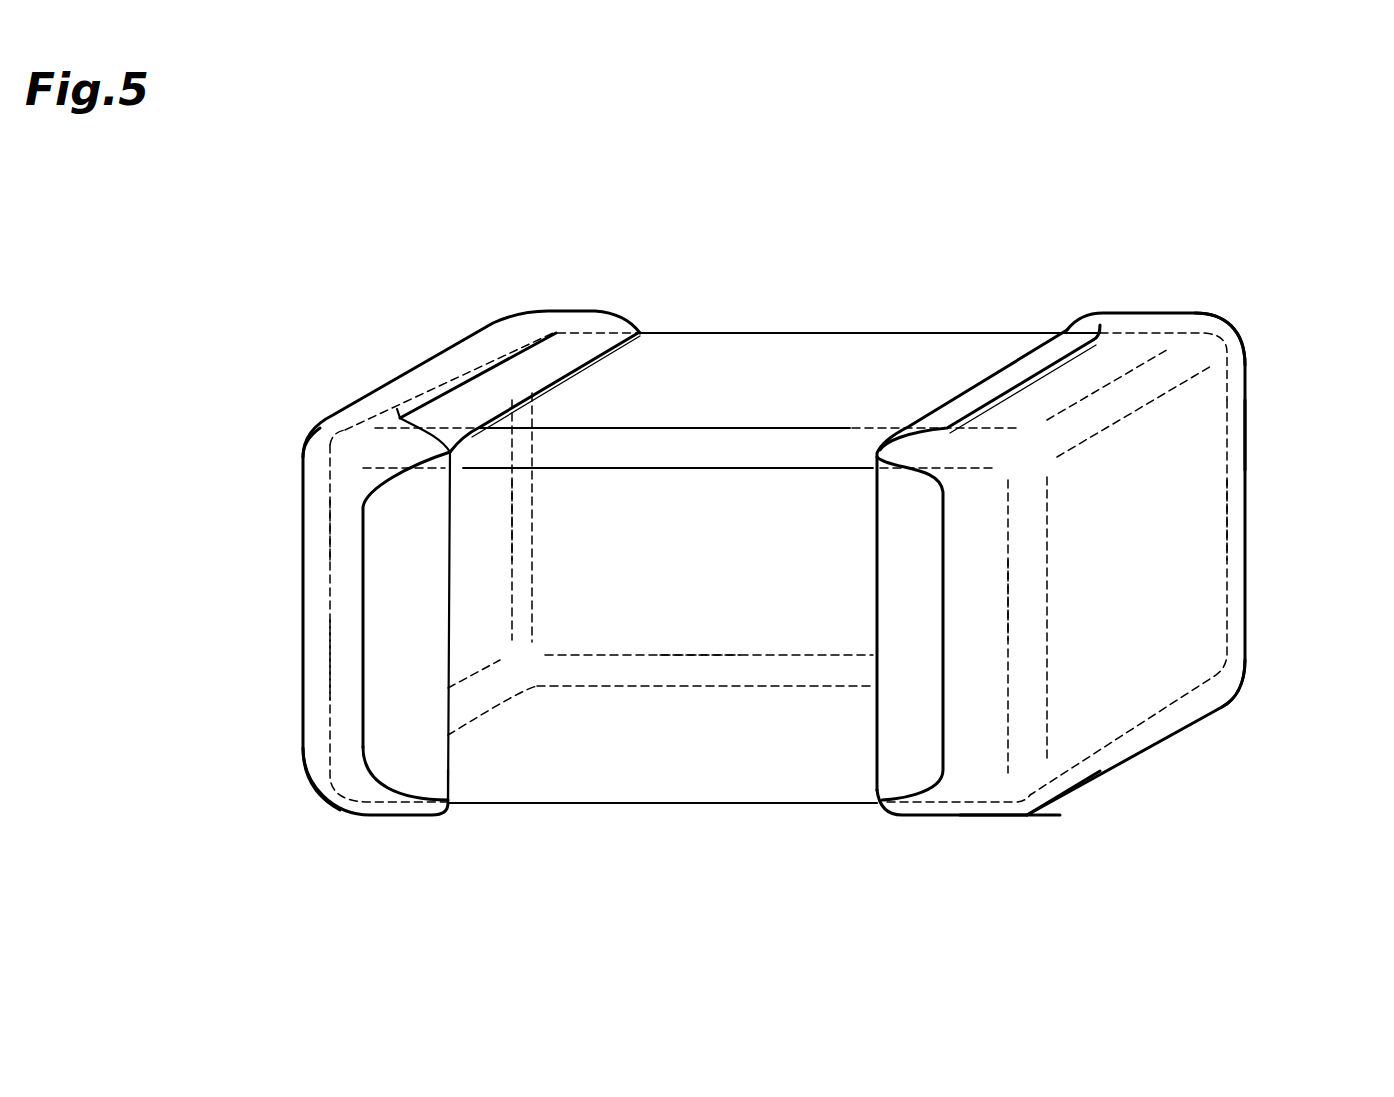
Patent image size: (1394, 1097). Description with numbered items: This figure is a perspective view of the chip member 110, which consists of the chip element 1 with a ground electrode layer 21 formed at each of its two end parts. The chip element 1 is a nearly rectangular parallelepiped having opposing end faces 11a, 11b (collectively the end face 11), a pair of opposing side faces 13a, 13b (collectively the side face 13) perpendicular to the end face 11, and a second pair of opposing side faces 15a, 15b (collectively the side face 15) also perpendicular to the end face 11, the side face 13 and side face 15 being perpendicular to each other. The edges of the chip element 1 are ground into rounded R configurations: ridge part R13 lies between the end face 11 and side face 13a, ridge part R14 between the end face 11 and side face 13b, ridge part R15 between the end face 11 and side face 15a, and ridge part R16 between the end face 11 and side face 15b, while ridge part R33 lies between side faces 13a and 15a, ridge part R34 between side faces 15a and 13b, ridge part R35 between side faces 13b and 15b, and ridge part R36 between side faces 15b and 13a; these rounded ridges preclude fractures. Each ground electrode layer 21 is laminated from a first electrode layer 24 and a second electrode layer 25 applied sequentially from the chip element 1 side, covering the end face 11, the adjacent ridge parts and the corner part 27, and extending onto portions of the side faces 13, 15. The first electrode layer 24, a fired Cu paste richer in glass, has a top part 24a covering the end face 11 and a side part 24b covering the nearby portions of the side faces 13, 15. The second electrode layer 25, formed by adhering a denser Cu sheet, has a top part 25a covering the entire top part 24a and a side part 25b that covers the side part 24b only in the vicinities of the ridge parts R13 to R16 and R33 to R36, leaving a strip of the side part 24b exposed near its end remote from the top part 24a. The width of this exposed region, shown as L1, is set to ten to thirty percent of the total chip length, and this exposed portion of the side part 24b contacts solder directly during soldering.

The chip member 110 is at (1252, 215).
The chip element 1 is at (884, 330).
The ground electrode layer 21 is at (763, 504).
The first electrode layer 24 is at (763, 519).
The top part of the first electrode layer 24a is at (343, 580).
The side part of the first electrode layer 24b is at (523, 370).
The second electrode layer 25 is at (763, 526).
The top part of the second electrode layer 25a is at (302, 543).
The side part of the second electrode layer 25b is at (463, 362).
The end face 11 is at (768, 562).
The end face 11a is at (353, 637).
The end face 11b is at (1147, 592).
The side face 13 is at (697, 570).
The side face 13a is at (708, 370).
The side face 13b is at (778, 768).
The side face 15 is at (693, 570).
The side face 15a is at (548, 717).
The side face 15b is at (835, 388).
The corner part 27 is at (317, 443).
The ridge part R13 is at (425, 375).
The ridge part R14 is at (465, 712).
The ridge part R15 is at (327, 660).
The ridge part R16 is at (522, 517).
The ridge part R33 is at (640, 445).
The ridge part R34 is at (658, 803).
The ridge part R35 is at (700, 667).
The ridge part R36 is at (785, 333).
The width of the exposed portion of the side part L1 is at (448, 684).